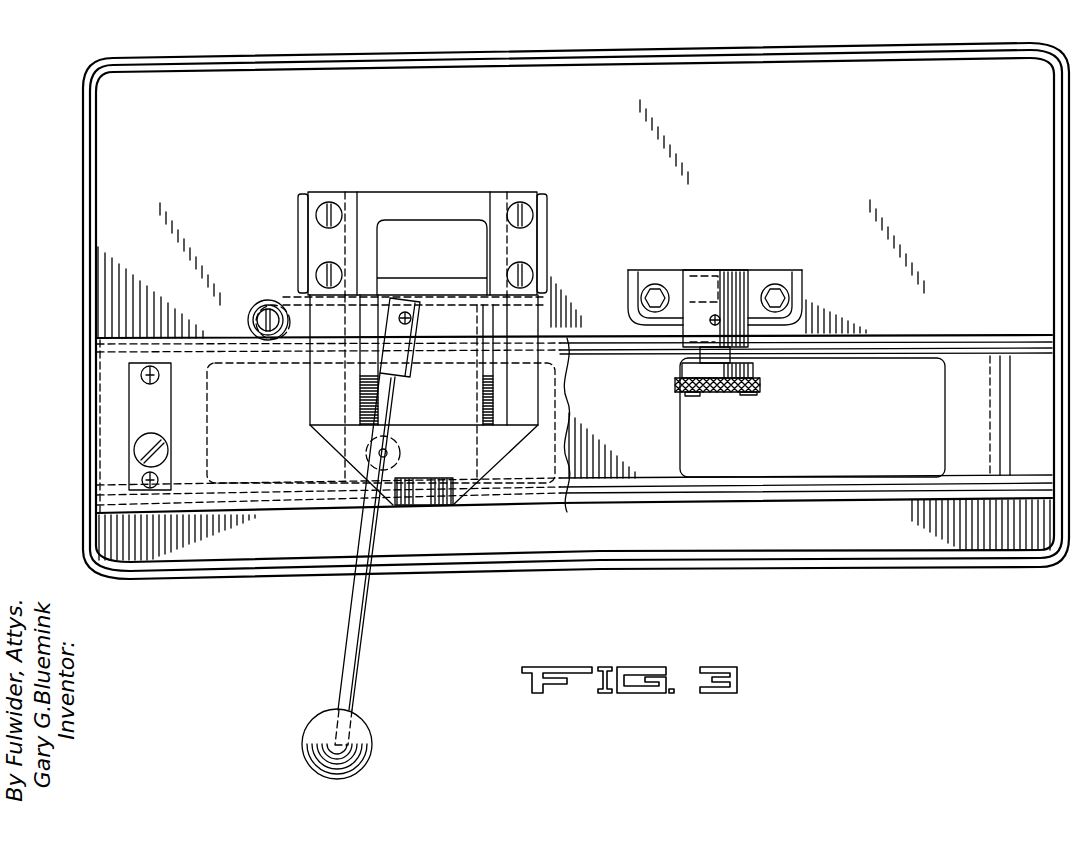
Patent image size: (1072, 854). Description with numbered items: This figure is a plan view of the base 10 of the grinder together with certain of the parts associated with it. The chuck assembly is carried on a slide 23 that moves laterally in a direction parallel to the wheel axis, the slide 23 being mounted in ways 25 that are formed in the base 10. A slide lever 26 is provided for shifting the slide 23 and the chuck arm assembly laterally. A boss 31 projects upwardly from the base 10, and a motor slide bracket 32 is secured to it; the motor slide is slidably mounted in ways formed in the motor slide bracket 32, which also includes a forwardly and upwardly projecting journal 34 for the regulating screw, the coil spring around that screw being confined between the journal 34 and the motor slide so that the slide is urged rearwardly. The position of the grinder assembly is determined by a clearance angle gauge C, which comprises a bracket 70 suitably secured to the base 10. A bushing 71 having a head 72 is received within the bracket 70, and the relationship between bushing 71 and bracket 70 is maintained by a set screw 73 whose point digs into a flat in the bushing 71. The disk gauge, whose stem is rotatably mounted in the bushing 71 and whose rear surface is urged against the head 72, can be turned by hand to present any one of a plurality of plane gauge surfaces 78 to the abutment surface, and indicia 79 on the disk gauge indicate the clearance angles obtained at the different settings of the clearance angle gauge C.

The base 10 is at (88, 246).
The slide 23 is at (118, 428).
The ways 25 is at (1034, 352).
The slide lever 26 is at (361, 645).
The boss 31 is at (548, 213).
The motor slide bracket 32 is at (325, 388).
The journal 34 is at (453, 507).
The bracket 70 is at (752, 276).
The bushing 71 is at (698, 358).
The head 72 is at (690, 370).
The set screw 73 is at (712, 323).
The gauge surfaces 78 is at (688, 393).
The indicia 79 is at (760, 390).
The clearance angle gauge C is at (775, 380).